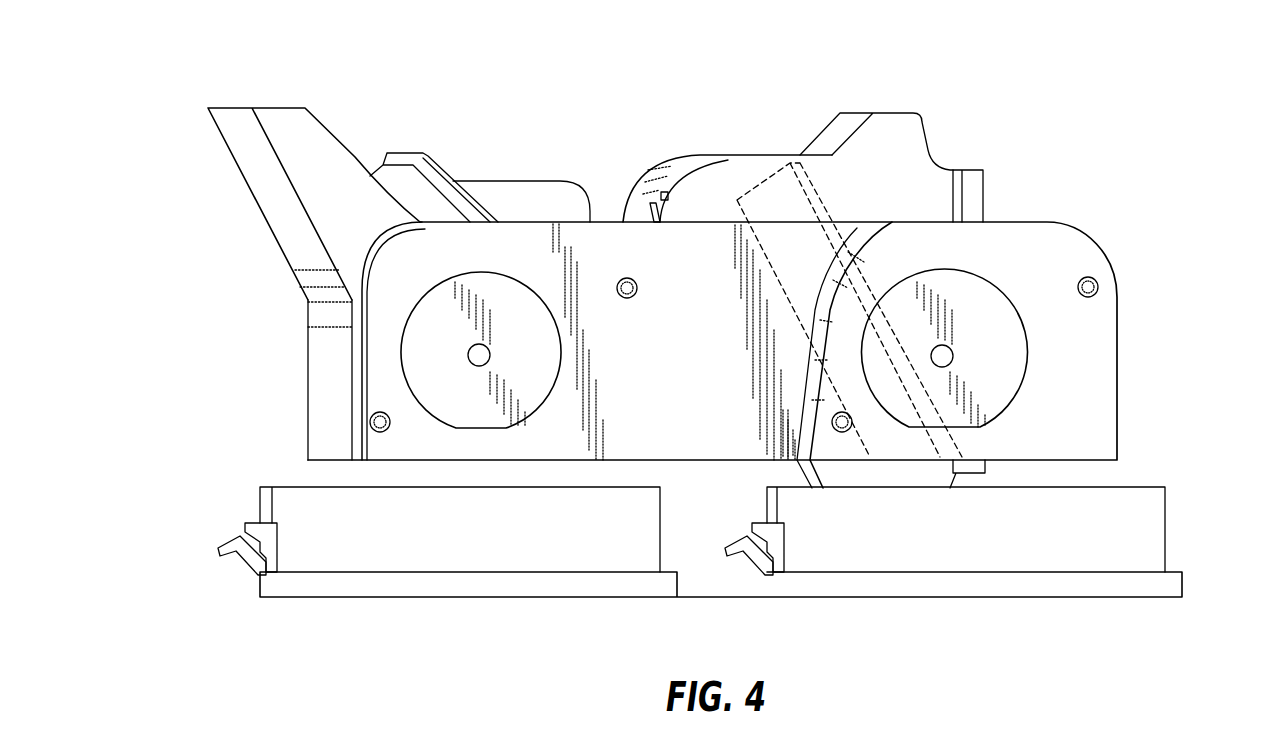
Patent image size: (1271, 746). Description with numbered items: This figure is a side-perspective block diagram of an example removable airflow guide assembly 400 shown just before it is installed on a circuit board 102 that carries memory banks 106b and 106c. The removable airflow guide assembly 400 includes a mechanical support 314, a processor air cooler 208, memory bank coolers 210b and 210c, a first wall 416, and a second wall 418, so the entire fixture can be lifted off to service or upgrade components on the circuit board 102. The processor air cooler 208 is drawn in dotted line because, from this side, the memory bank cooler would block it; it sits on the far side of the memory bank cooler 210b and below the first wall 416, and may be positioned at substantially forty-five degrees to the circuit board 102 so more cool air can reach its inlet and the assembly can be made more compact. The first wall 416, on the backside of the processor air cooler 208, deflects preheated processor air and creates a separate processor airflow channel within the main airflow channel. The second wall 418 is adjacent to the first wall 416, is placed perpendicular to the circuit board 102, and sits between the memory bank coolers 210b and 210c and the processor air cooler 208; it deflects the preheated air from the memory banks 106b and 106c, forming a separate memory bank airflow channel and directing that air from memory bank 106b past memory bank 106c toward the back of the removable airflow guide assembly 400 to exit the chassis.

The removable airflow guide assembly 400 is at (141, 80).
The second wall 418 is at (672, 272).
The mechanical support 314 is at (320, 203).
The first wall 416 is at (690, 158).
The processor air cooler 208 is at (862, 282).
The memory bank cooler 210c is at (420, 368).
The memory bank cooler 210b is at (1013, 367).
The memory bank 106c is at (383, 542).
The memory bank 106b is at (1122, 500).
The circuit board 102 is at (1175, 582).